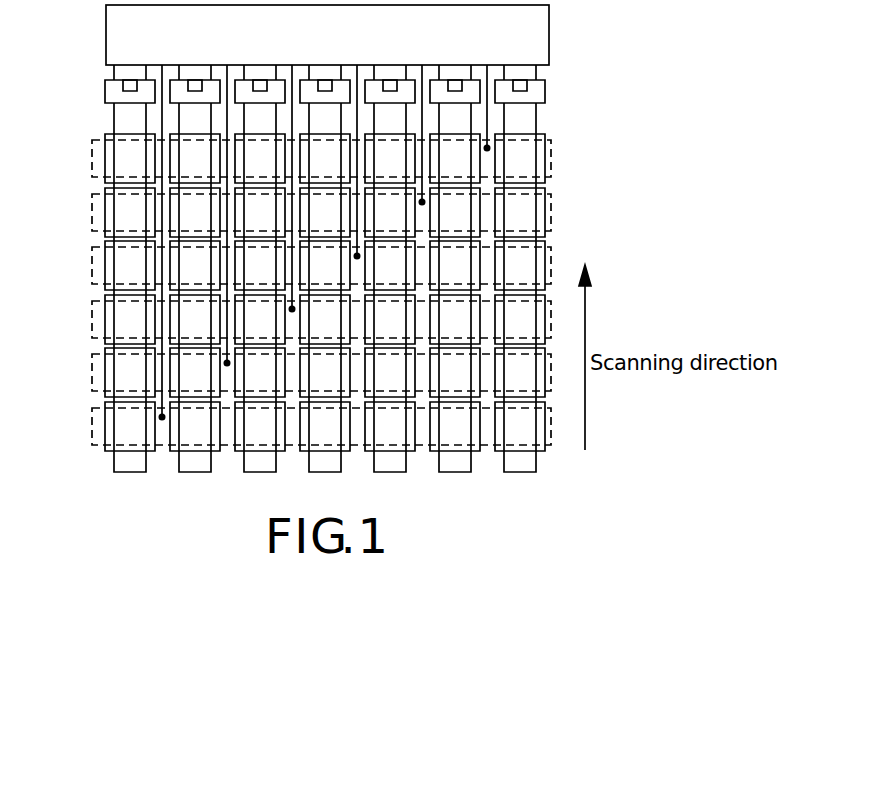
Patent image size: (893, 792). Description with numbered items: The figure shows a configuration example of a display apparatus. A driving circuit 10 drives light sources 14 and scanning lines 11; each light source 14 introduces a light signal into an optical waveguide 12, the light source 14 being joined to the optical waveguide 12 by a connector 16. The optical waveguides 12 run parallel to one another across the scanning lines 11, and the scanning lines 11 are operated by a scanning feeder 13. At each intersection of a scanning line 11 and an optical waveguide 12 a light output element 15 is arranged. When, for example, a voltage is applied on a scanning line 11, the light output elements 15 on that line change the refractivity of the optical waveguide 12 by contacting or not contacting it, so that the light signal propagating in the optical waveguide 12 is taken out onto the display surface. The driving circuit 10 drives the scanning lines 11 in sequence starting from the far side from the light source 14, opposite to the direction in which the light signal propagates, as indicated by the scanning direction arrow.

The driving circuit 10 is at (541, 33).
The scanning line 11 is at (92, 170).
The optical waveguide 12 is at (526, 115).
The scanning feeder 13 is at (160, 317).
The light source 14 is at (530, 72).
The light output element 15 is at (525, 195).
The connector 16 is at (105, 96).